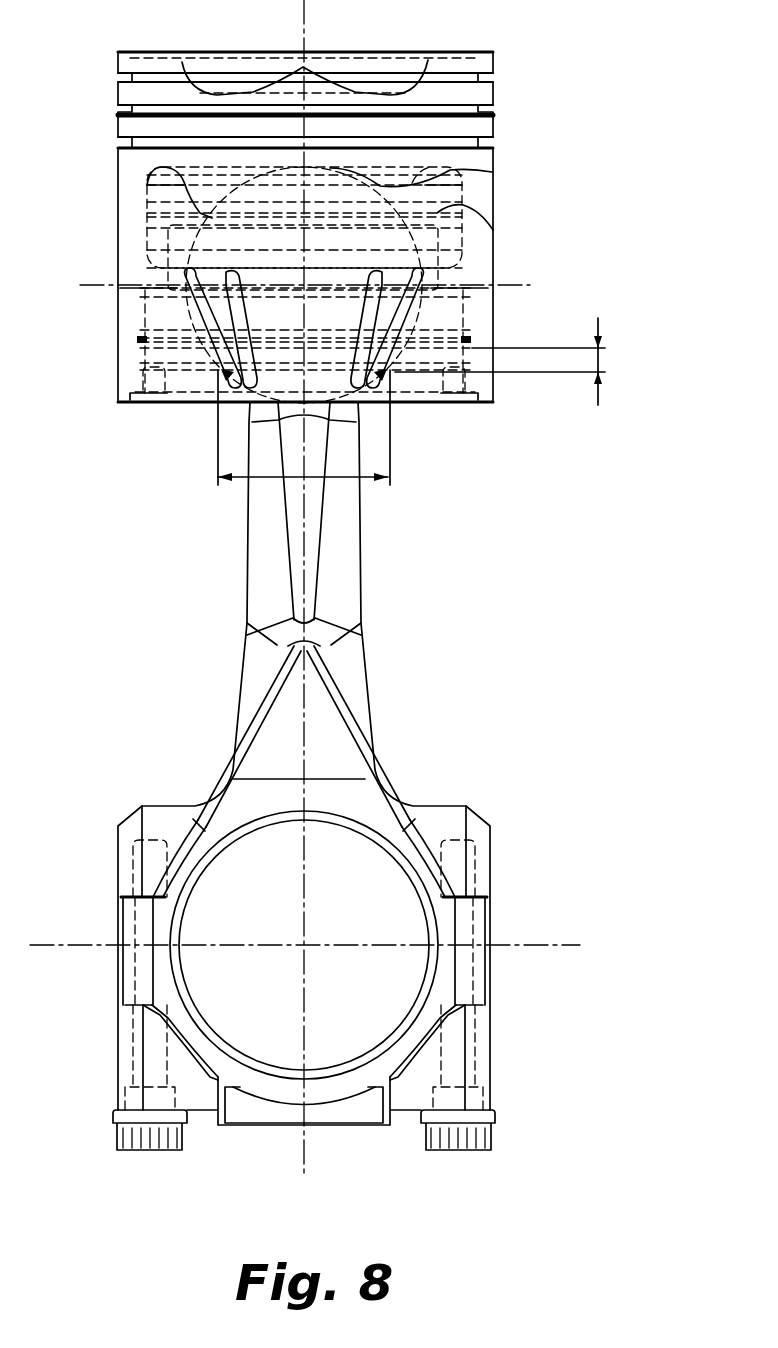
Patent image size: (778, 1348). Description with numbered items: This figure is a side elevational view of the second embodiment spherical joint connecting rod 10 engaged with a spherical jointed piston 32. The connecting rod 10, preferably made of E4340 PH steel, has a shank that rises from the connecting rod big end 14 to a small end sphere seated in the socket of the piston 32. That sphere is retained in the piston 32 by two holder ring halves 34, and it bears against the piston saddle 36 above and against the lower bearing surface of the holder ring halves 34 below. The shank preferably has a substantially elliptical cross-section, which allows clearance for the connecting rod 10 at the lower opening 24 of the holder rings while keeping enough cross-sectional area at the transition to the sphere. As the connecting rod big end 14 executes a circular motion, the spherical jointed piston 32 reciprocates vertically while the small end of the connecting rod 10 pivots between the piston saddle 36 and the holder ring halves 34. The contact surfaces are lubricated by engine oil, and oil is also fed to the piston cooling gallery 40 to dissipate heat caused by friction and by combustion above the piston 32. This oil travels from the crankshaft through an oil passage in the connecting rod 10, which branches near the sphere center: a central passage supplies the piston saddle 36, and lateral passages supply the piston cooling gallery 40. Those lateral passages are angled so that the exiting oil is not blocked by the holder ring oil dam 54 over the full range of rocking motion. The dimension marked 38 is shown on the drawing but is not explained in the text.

The connecting rod 10 is at (435, 562).
The connecting rod big end 14 is at (488, 925).
The lower opening of the holder rings 24 is at (388, 477).
The spherical jointed piston 32 is at (493, 52).
The holder ring halves 34 is at (148, 305).
The piston saddle 36 is at (492, 172).
The offset distance 38 is at (600, 360).
The piston cooling gallery 40 is at (493, 230).
The holder ring oil dam 54 is at (440, 243).